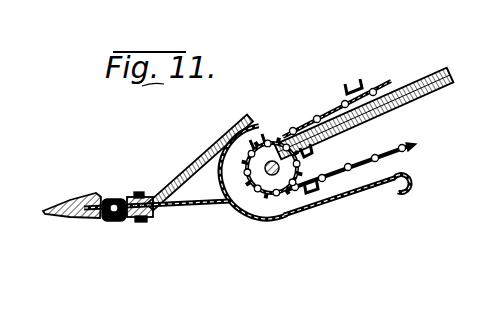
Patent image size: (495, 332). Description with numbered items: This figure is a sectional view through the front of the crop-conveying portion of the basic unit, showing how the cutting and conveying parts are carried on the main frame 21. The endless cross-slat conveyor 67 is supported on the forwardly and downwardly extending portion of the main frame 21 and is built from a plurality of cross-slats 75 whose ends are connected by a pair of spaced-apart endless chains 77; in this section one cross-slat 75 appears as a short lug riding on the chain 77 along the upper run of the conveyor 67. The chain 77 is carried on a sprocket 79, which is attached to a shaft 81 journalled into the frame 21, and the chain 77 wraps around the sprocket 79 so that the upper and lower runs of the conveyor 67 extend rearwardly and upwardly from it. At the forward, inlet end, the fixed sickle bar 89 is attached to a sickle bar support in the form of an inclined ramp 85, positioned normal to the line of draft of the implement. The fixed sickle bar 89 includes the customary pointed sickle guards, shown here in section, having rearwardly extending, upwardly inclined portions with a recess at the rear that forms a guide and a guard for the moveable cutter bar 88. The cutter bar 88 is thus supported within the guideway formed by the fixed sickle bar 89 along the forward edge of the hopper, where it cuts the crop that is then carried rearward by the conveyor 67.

The main frame 21 is at (415, 92).
The endless cross-slat conveyor 67 is at (415, 150).
The cross-slat 75 is at (353, 90).
The endless chain 77 is at (329, 108).
The sprocket 79 is at (255, 192).
The shaft 81 is at (273, 173).
The inclined ramp 85 is at (206, 153).
The moveable cutter bar 88 is at (99, 199).
The fixed sickle bar 89 is at (71, 218).